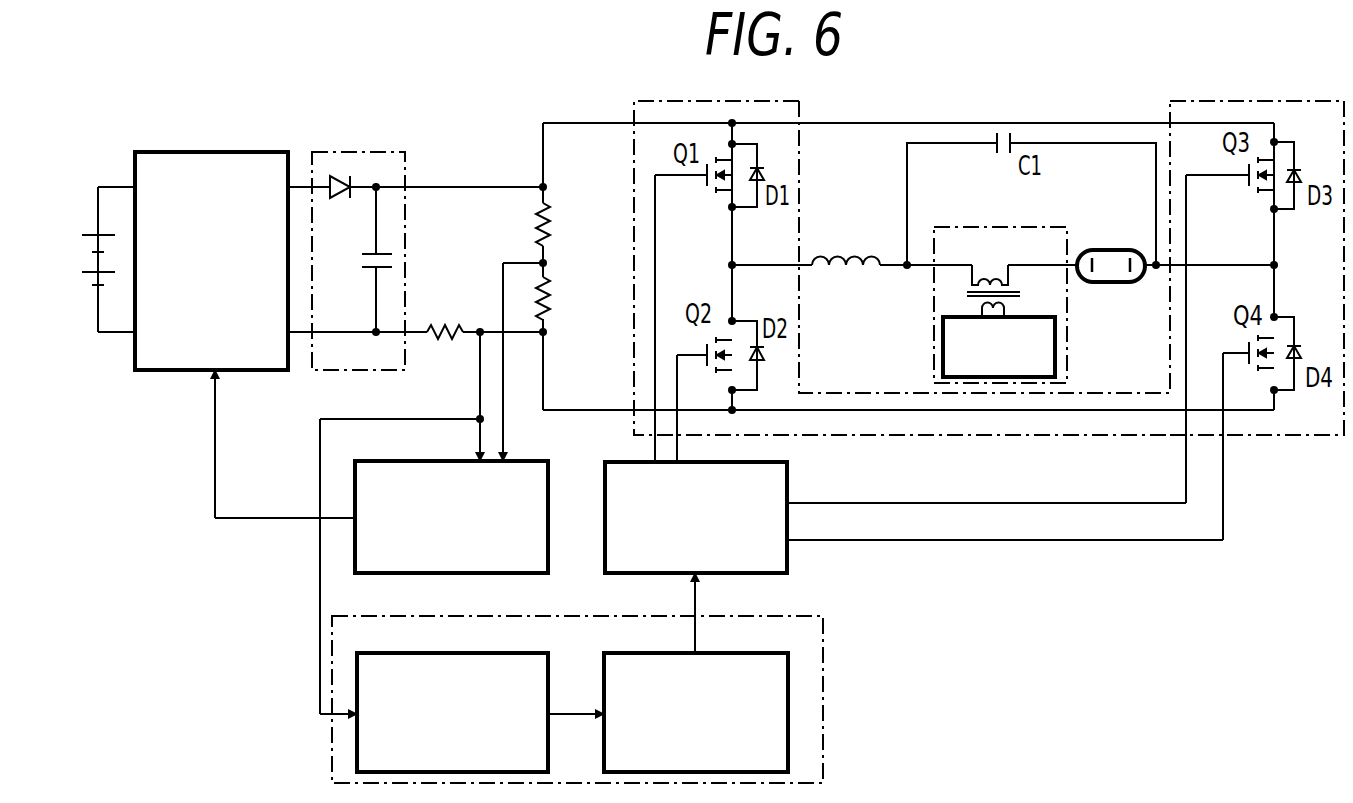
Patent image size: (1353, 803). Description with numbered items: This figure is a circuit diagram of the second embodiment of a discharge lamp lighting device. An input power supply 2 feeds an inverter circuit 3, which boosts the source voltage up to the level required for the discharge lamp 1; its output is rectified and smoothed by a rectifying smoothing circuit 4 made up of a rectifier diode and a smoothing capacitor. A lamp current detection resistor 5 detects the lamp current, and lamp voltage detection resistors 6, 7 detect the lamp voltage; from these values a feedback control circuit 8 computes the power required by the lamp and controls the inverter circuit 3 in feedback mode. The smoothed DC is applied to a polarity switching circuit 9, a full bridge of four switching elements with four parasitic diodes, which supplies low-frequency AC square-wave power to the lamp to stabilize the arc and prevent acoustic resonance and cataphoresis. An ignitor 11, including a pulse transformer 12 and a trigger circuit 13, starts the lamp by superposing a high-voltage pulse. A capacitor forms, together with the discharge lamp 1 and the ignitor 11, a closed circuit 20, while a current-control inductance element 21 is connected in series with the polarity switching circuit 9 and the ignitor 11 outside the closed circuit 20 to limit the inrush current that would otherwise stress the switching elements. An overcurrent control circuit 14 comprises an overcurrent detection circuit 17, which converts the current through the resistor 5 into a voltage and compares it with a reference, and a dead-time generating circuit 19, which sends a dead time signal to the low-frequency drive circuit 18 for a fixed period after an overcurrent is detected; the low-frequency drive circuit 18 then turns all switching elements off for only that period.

The discharge lamp 1 is at (1112, 249).
The input power supply 2 is at (82, 252).
The inverter circuit 3 is at (260, 152).
The rectifying smoothing circuit 4 is at (371, 152).
The lamp current detection resistor 5 is at (447, 321).
The lamp voltage detection resistor 6 is at (556, 228).
The lamp voltage detection resistor 7 is at (555, 289).
The feedback control circuit 8 is at (518, 461).
The polarity switching circuit 9 is at (1290, 435).
The ignitor 11 is at (1028, 227).
The pulse transformer 12 is at (986, 264).
The trigger circuit 13 is at (1060, 330).
The overcurrent control circuit 14 is at (825, 655).
The overcurrent detection circuit 17 is at (503, 653).
The low-frequency drive circuit 18 is at (772, 461).
The dead-time generating circuit 19 is at (763, 652).
The closed circuit 20 is at (902, 257).
The current-control inductance element 21 is at (838, 248).